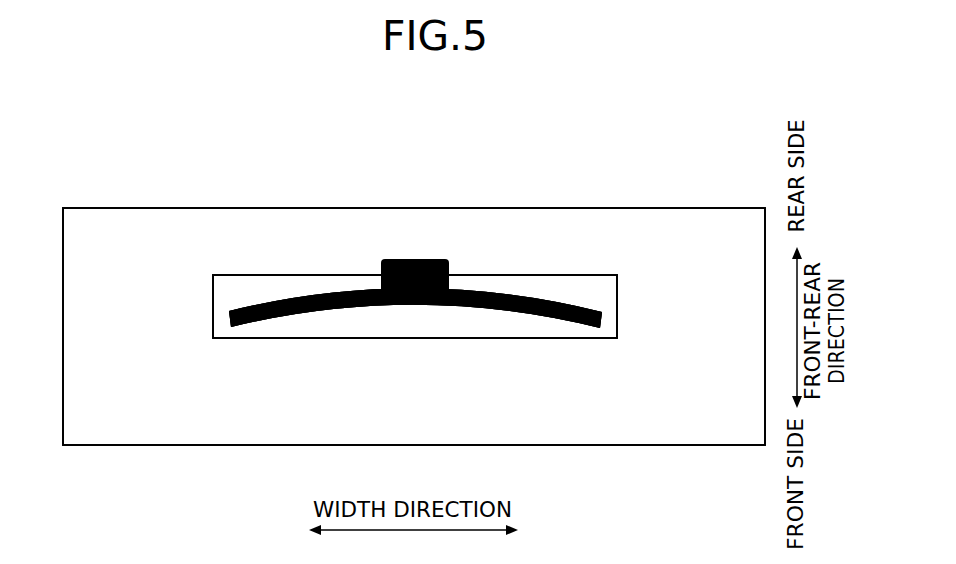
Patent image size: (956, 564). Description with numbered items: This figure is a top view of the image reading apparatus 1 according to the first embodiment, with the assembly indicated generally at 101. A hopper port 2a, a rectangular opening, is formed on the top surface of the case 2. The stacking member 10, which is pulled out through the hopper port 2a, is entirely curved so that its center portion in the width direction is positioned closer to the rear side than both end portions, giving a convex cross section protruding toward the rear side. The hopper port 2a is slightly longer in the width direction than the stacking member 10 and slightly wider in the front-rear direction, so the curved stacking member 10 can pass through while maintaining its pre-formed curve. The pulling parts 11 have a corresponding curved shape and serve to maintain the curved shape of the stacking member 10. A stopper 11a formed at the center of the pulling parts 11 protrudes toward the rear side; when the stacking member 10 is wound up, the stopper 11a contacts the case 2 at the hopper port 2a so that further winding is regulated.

The image reading apparatus 1 is at (66, 169).
The case 2 is at (153, 208).
The hopper port 2a is at (266, 280).
The pressure sensor unit 101 is at (397, 169).
The pulling parts 11 is at (518, 300).
The stopper 11a is at (425, 262).
The stacking member 10 is at (553, 320).